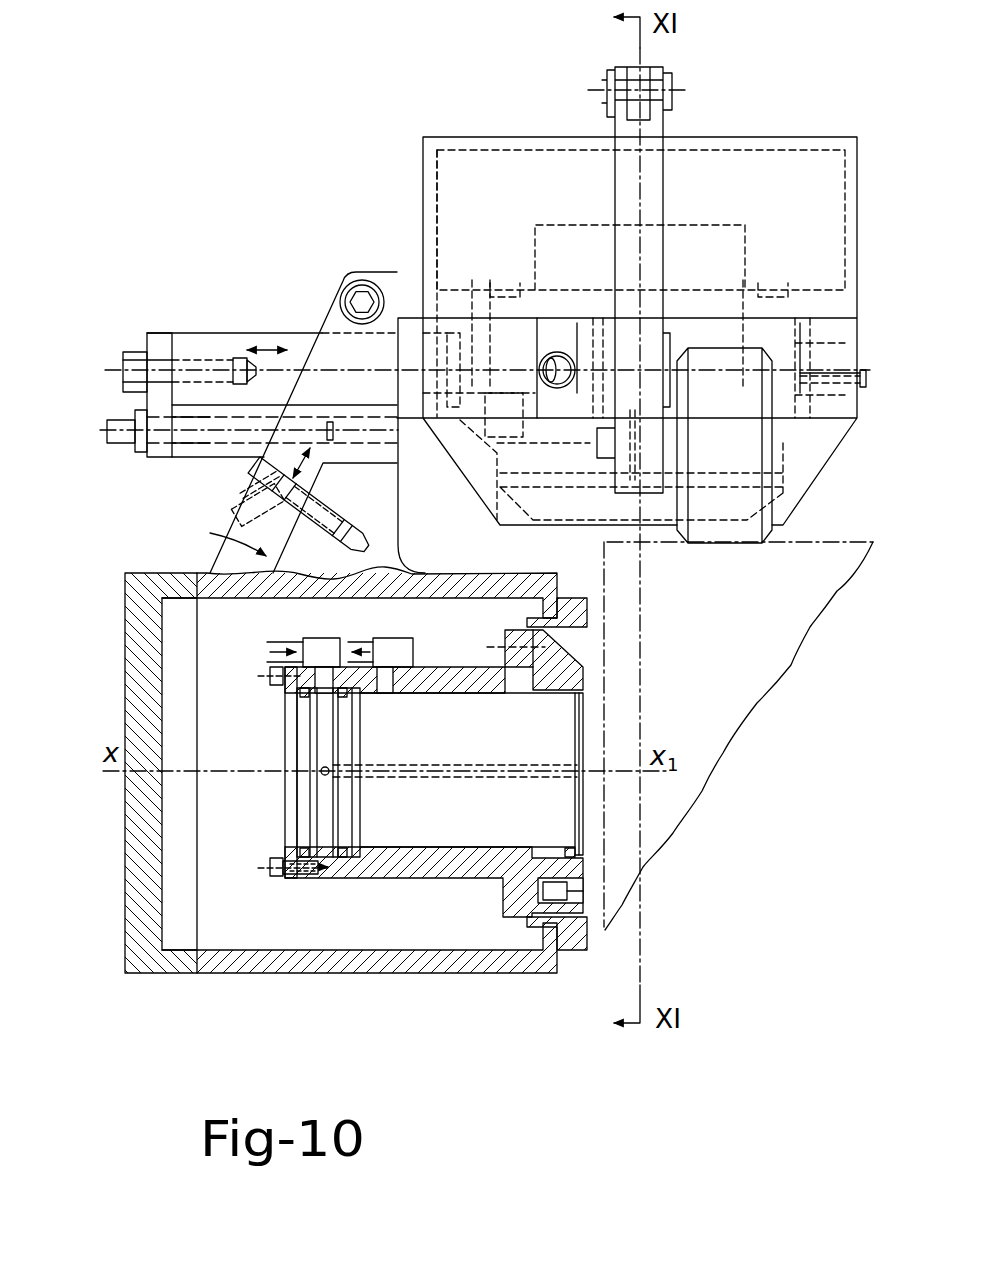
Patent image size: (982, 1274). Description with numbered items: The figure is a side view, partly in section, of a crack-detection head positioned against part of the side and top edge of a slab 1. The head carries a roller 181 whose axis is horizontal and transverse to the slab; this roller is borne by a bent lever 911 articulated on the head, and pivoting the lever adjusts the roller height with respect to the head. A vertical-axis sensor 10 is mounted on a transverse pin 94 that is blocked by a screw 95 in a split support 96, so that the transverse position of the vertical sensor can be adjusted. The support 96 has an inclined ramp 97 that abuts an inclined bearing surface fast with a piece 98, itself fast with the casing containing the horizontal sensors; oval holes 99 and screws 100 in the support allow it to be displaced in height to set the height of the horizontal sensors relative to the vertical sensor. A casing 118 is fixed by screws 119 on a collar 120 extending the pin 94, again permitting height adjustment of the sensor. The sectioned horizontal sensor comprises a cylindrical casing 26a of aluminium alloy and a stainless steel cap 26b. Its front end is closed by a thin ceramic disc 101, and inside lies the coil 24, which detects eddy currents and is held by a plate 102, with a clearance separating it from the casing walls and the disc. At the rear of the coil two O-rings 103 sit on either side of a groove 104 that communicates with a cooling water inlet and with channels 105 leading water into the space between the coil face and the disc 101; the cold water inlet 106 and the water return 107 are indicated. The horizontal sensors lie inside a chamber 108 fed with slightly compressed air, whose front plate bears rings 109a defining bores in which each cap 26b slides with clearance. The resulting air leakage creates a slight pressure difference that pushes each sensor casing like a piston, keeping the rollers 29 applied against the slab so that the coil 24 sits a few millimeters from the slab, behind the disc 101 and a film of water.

The slab 1 is at (778, 656).
The vertical-axis sensor 10 is at (865, 136).
The roller 181 is at (718, 521).
The coil 24 is at (470, 752).
The cylindrical casing body 26a is at (446, 680).
The cap 26b is at (583, 668).
The rollers 29 is at (555, 897).
The bent lever 911 is at (655, 172).
The transverse pin 94 is at (215, 345).
The screw 95 is at (362, 280).
The split support 96 is at (333, 320).
The inclined ramp 97 is at (220, 534).
The piece 98 is at (372, 507).
The oval holes 99 is at (243, 513).
The screws 100 is at (257, 493).
The ceramic disc 101 is at (583, 723).
The plate 102 is at (282, 693).
The O-rings 103 is at (293, 847).
The groove 104 is at (323, 738).
The channels 105 is at (470, 780).
The cold water inlet 106 is at (318, 648).
The water return 107 is at (398, 648).
The chamber 108 is at (147, 805).
The rings 109a is at (583, 613).
The casing 118 is at (479, 231).
The screws 119 is at (557, 351).
The collar 120 is at (832, 405).